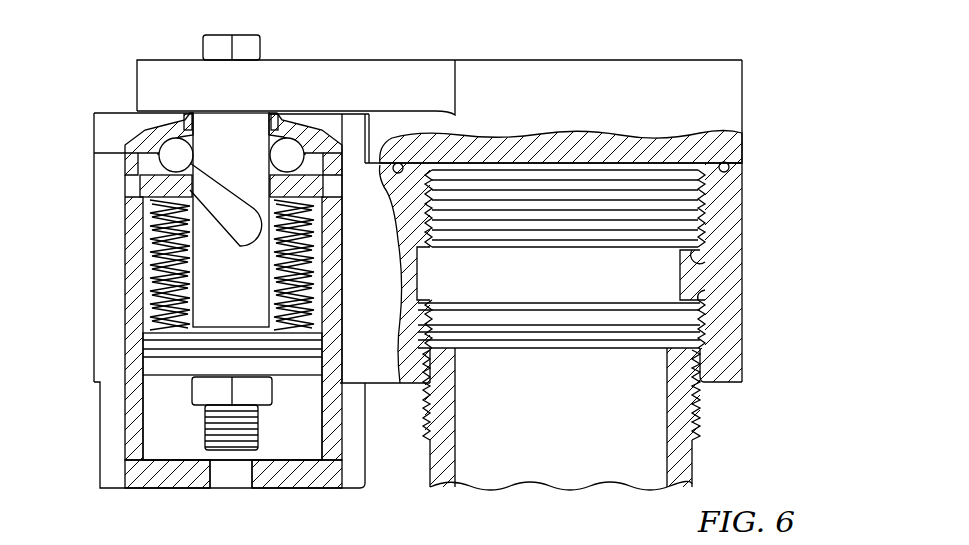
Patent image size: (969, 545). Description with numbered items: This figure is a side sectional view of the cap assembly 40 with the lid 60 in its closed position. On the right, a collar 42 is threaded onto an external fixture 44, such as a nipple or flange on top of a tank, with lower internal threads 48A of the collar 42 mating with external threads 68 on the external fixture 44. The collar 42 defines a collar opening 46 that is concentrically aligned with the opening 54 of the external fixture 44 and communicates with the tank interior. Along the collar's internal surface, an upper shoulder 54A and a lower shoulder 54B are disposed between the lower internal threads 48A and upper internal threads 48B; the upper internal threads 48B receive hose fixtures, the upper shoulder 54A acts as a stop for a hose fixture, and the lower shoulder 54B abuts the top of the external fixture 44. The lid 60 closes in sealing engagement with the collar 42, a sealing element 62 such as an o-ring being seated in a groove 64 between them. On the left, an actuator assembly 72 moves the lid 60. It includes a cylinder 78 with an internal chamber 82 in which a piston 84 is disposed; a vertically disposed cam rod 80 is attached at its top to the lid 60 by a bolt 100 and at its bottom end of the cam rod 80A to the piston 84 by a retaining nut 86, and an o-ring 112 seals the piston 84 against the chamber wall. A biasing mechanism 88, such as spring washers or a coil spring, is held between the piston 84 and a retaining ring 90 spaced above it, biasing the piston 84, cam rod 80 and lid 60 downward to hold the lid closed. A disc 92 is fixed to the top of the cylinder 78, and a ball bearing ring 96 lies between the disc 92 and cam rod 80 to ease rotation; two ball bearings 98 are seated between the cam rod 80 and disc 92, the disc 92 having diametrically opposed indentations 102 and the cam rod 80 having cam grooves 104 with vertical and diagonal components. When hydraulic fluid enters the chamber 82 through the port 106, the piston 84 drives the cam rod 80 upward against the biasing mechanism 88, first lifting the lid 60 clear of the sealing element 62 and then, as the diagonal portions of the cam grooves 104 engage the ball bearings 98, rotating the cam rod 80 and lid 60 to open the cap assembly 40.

The cap assembly 40 is at (92, 52).
The bolt 100 is at (245, 34).
The disc 92 is at (94, 134).
The cylinder 78 is at (100, 451).
The ball bearing ring 96 is at (183, 118).
The indentations 102 is at (313, 147).
The actuator assembly 72 is at (132, 265).
The ball bearings 98 is at (287, 152).
The retaining ring 90 is at (158, 188).
The biasing mechanism 88 is at (152, 230).
The cam rod 80 is at (245, 285).
The cam grooves 104 is at (216, 206).
The o-ring 112 is at (152, 356).
The piston 84 is at (157, 378).
The retaining nut 86 is at (205, 396).
The bottom end of the cam rod 80A is at (258, 425).
The internal chamber 82 is at (182, 440).
The port 106 is at (230, 478).
The lid 60 is at (607, 50).
The collar opening 46 is at (558, 162).
The sealing element 62 is at (726, 165).
The groove 64 is at (740, 168).
The collar 42 is at (742, 280).
The upper internal threads 48B is at (697, 200).
The upper shoulder 54A is at (703, 258).
The lower shoulder 54B is at (707, 291).
The lower internal threads 48A is at (697, 338).
The external threads 68 is at (696, 414).
The external fixture 44 is at (692, 450).
The opening 54 is at (545, 448).